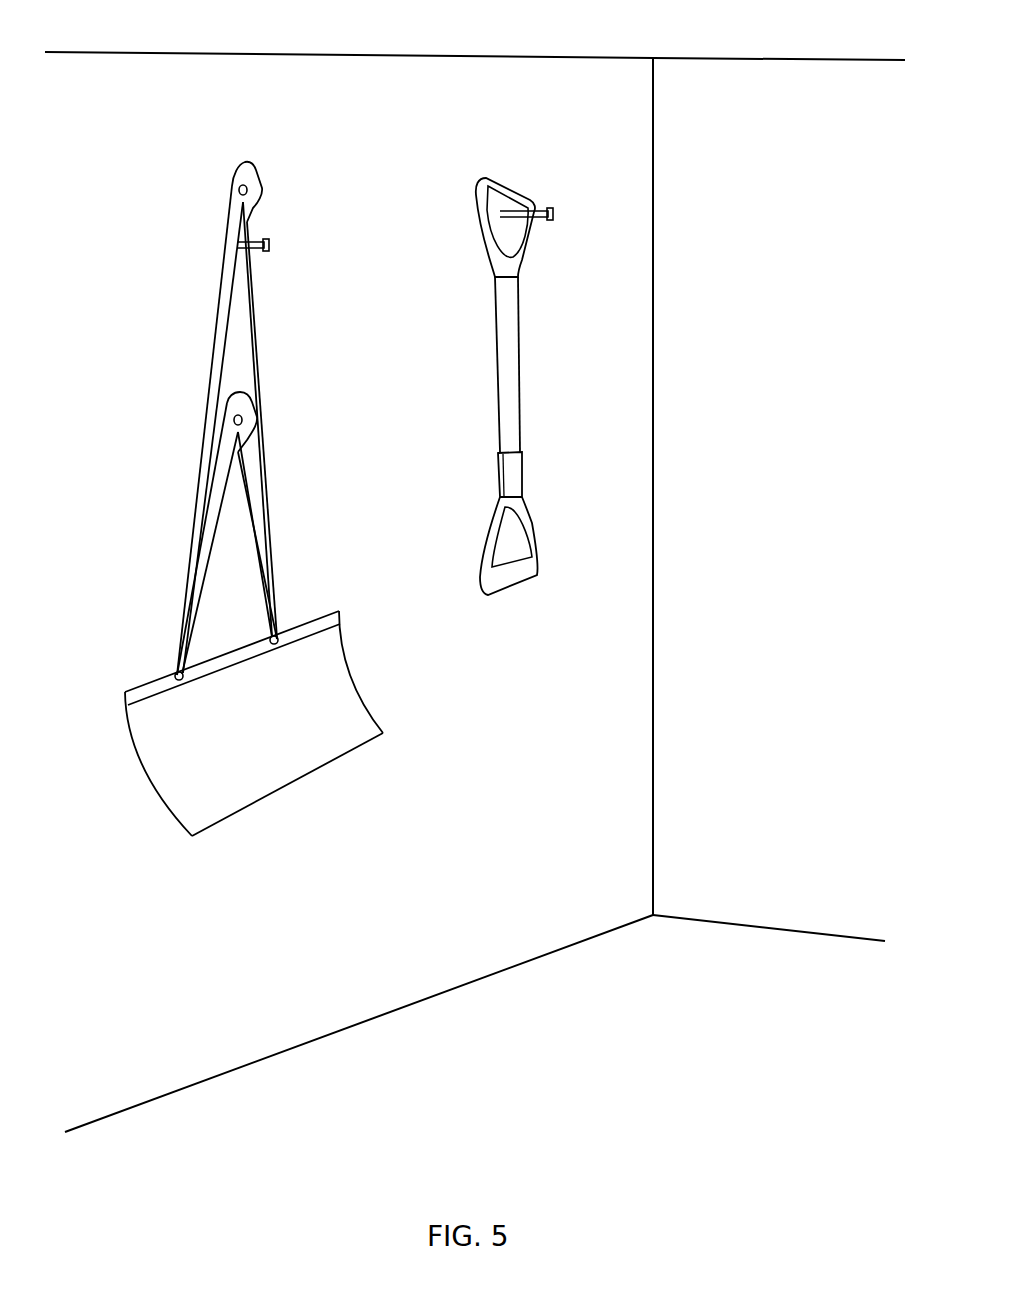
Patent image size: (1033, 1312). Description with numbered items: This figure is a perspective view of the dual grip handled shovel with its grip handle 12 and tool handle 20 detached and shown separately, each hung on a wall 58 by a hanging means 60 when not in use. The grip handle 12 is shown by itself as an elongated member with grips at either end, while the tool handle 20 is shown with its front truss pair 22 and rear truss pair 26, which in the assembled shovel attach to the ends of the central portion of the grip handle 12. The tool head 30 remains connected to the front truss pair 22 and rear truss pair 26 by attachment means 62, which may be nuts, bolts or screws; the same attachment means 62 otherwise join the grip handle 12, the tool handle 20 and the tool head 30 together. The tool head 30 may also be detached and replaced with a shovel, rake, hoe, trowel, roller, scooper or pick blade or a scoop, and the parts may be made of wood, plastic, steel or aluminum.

The wall 58 is at (610, 82).
The hanging means 60 is at (269, 242).
The attachment means 62 is at (238, 188).
The tool handle 20 is at (211, 285).
The rear truss pair 26 is at (231, 310).
The front truss pair 22 is at (215, 538).
The tool head 30 is at (134, 775).
The grip handle 12 is at (538, 425).